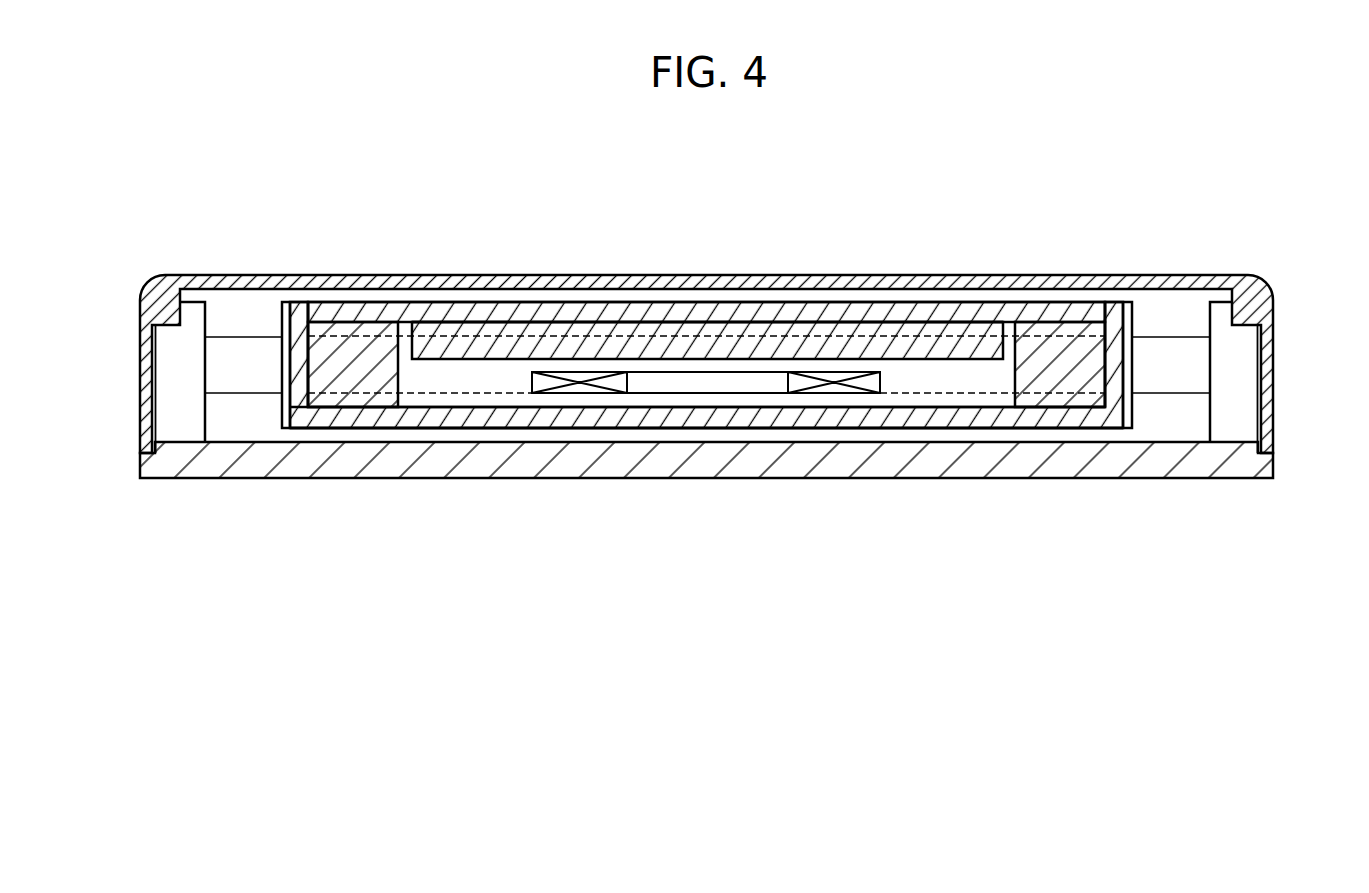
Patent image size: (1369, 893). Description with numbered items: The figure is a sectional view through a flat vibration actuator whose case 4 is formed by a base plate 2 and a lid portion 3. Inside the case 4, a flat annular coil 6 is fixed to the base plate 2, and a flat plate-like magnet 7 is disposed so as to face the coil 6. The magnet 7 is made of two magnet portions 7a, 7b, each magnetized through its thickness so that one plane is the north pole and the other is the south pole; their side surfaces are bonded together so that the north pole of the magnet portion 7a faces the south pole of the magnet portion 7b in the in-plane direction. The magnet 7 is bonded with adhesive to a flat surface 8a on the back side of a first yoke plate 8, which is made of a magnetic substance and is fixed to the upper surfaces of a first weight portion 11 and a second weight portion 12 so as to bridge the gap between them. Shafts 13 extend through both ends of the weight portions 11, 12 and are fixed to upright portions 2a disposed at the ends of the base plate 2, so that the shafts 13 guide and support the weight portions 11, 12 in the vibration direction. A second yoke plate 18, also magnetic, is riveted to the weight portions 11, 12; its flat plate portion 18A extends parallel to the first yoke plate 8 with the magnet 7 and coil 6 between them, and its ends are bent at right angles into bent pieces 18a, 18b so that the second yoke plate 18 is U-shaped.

The base plate 2 is at (732, 458).
The upright portions 2a is at (172, 340).
The lid portion 3 is at (1272, 395).
The case 4 is at (753, 376).
The coil 6 is at (835, 385).
The magnet 7 is at (707, 254).
The magnet portion 7a is at (850, 280).
The magnet portion 7b is at (542, 337).
The first yoke plate 8 is at (706, 263).
The flat surface 8a is at (913, 323).
The first weight portion 11 is at (1063, 340).
The second weight portion 12 is at (355, 345).
The shafts 13 is at (1162, 350).
The second yoke plate 18 is at (720, 430).
The flat plate portion 18A is at (549, 418).
The bent piece 18a is at (1120, 360).
The bent piece 18b is at (297, 352).